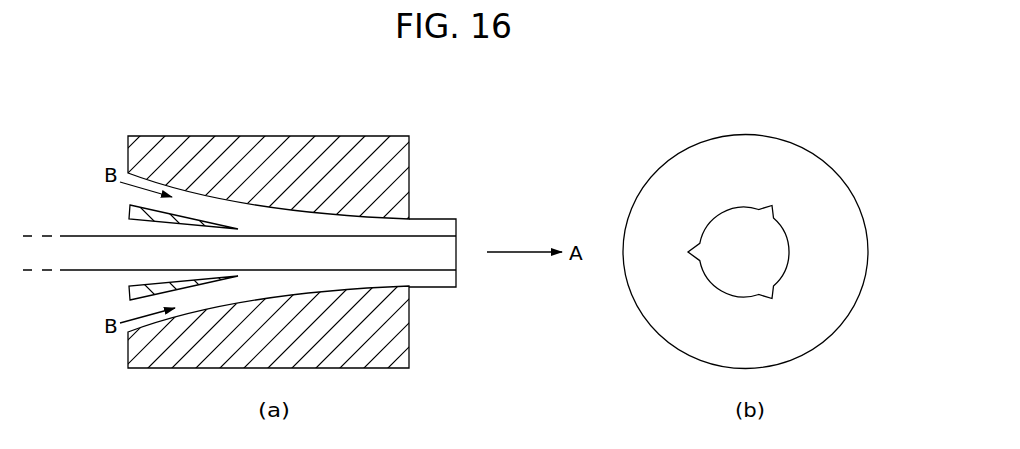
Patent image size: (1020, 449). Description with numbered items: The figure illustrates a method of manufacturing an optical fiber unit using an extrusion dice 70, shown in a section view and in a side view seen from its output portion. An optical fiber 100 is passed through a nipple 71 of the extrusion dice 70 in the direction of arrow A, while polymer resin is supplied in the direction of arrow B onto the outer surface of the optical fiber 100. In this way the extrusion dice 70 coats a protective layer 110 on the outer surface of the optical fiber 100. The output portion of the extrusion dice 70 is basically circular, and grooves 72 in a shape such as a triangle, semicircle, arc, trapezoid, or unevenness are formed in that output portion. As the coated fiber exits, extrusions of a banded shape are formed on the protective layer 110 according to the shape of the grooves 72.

The extrusion dice 70 is at (360, 150).
The nipple 71 is at (132, 210).
The grooves 72 is at (773, 207).
The optical fiber 100 is at (108, 255).
The protective layer 110 is at (430, 228).